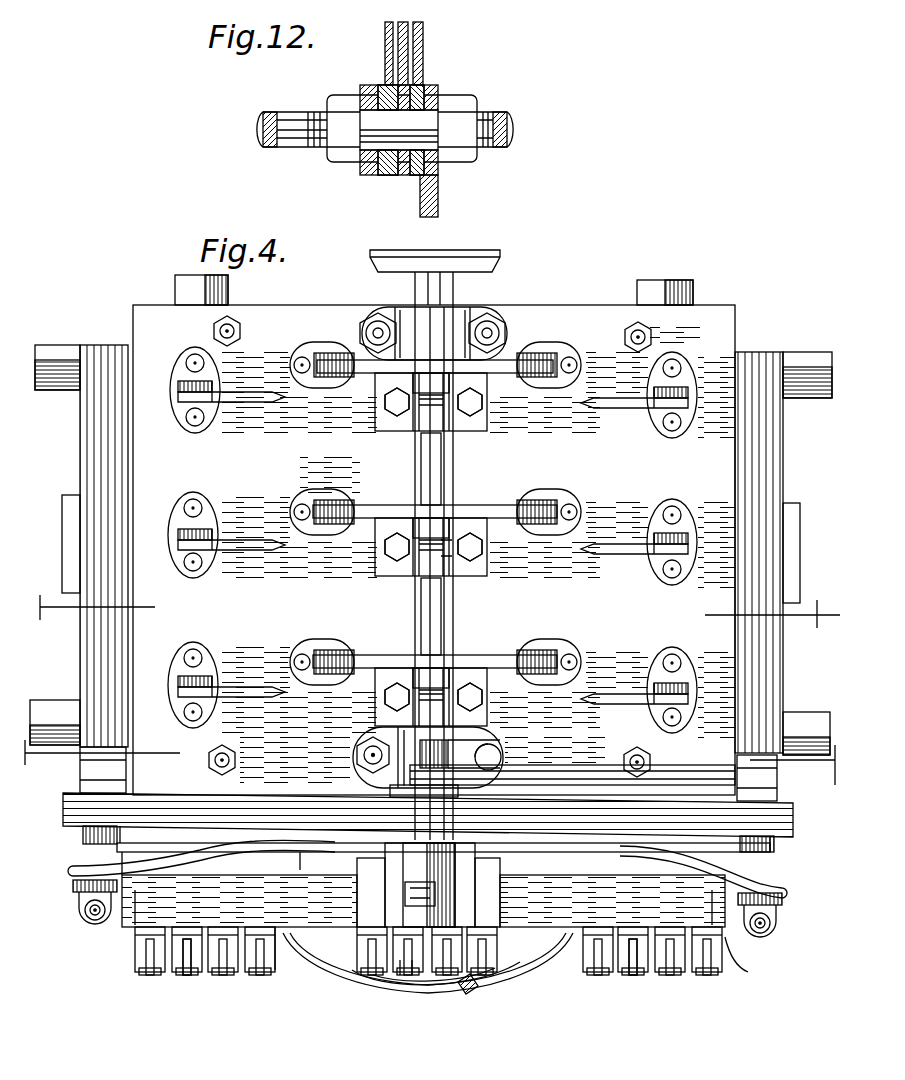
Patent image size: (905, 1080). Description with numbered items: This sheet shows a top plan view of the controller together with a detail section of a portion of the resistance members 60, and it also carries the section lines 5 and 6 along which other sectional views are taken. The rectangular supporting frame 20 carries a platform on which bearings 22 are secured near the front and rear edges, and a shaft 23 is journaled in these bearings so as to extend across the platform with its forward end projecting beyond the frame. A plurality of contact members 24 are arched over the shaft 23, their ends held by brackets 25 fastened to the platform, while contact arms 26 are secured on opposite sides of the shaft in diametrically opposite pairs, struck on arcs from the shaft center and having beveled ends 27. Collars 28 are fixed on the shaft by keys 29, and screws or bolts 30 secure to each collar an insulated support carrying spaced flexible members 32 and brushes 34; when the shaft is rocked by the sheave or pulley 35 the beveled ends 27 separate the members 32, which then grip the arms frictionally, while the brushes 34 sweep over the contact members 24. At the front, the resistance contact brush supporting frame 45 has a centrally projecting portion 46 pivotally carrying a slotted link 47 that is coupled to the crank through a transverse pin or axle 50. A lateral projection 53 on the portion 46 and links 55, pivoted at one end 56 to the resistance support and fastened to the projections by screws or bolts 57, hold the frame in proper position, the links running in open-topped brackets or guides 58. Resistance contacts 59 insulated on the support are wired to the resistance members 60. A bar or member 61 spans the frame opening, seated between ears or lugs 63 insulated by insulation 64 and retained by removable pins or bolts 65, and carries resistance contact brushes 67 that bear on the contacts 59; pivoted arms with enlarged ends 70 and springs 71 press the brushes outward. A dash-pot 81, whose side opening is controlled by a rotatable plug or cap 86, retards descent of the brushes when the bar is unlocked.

In FIG. 12, the resistance members 60 is at (396, 23).
In FIG. 4, the supporting frame 20 is at (95, 472).
In FIG. 4, the section line 5— 5 is at (430, 613).
In FIG. 4, the section line 6— 6 is at (427, 774).
In FIG. 4, the bearings 22 is at (452, 330).
In FIG. 4, the shaft 23 is at (415, 490).
In FIG. 4, the contact members 24 is at (505, 365).
In FIG. 4, the brackets 25 is at (325, 347).
In FIG. 4, the contact arms 26 is at (237, 540).
In FIG. 4, the beveled or tapered ends 27 is at (262, 398).
In FIG. 4, the collars 28 is at (477, 420).
In FIG. 4, the keys 29 is at (412, 447).
In FIG. 4, the screws or bolts 30 is at (393, 402).
In FIG. 4, the flexible members 32 is at (460, 556).
In FIG. 4, the flexible members or brushes 34 is at (425, 378).
In FIG. 4, the sheave or pulley 35 is at (485, 252).
In FIG. 4, the resistance contact brush supporting frame 45 is at (270, 852).
In FIG. 4, the centrally projecting portion 46 is at (427, 855).
In FIG. 4, the link 47 is at (405, 900).
In FIG. 4, the transverse pin or axle 50 is at (410, 977).
In FIG. 4, the lateral projection 53 is at (415, 792).
In FIG. 4, the links 55 is at (582, 785).
In FIG. 4, the pivoted end 56 is at (428, 815).
In FIG. 4, the screws or bolts 57 is at (405, 740).
In FIG. 4, the brackets or guides 58 is at (480, 792).
In FIG. 4, the resistance contacts 59 is at (225, 722).
In FIG. 4, the bar or member 61 is at (545, 912).
In FIG. 4, the projecting ears or lugs 63 is at (85, 905).
In FIG. 4, the insulation 64 is at (77, 878).
In FIG. 4, the pin or bolt 65 is at (96, 918).
In FIG. 4, the resistance contact brushes 67 is at (270, 950).
In FIG. 4, the enlarged free ends 70 is at (255, 970).
In FIG. 4, the yielding members 71 is at (172, 975).
In FIG. 4, the dash-pot 81 is at (428, 995).
In FIG. 4, the rotatively mounted plug or cap 86 is at (468, 992).